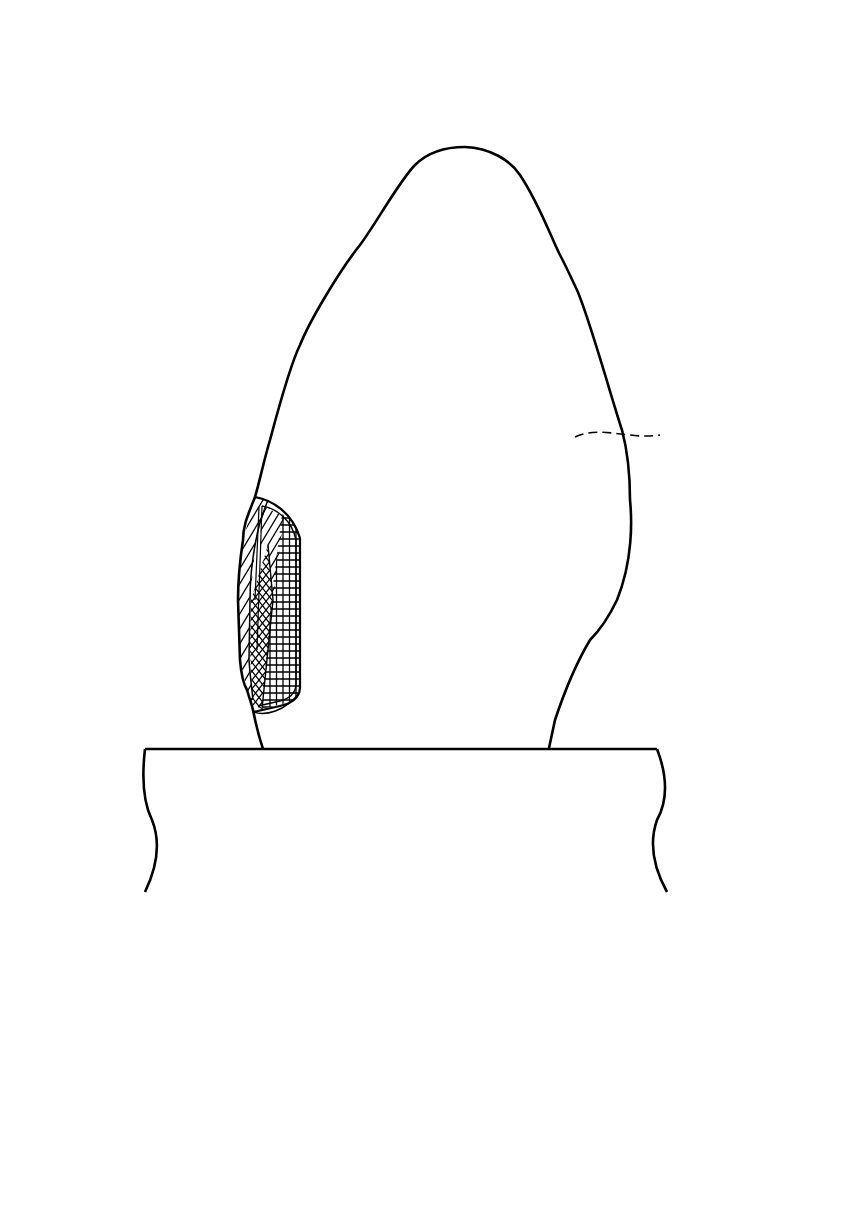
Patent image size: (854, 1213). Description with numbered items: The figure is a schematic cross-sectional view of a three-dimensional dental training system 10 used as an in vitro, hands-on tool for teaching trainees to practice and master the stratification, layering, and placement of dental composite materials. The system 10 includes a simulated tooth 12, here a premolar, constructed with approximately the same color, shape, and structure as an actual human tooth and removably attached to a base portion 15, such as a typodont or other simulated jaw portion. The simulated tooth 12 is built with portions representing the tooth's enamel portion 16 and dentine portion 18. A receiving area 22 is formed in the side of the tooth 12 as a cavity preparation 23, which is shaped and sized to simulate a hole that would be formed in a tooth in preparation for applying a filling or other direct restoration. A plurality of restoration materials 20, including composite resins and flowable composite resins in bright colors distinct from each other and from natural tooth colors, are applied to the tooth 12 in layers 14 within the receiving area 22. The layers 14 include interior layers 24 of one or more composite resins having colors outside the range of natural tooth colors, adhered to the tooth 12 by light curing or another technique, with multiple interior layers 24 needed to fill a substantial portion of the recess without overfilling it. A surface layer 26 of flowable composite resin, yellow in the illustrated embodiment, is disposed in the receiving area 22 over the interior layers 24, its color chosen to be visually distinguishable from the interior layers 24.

The three-dimensional dental training system 10 is at (663, 90).
The simulated tooth 12 is at (152, 320).
The layers 14 is at (187, 523).
The base portion 15 is at (618, 760).
The enamel portion 16 is at (558, 306).
The dentine portion 18 is at (633, 434).
The restoration materials 20 is at (294, 615).
The receiving area 22 is at (300, 513).
The cavity preparation 23 is at (301, 662).
The interior layers 24 is at (299, 547).
The surface layer 26 is at (240, 580).